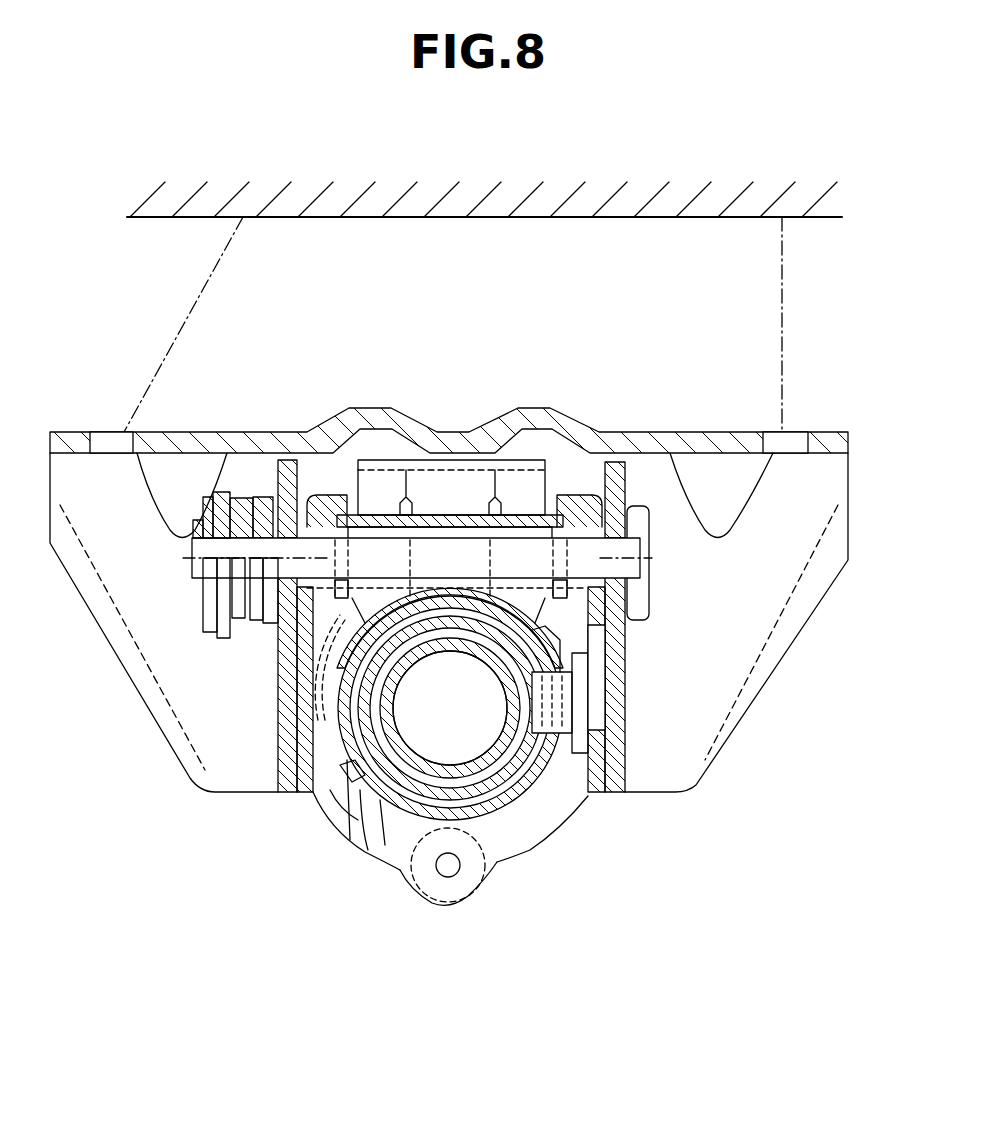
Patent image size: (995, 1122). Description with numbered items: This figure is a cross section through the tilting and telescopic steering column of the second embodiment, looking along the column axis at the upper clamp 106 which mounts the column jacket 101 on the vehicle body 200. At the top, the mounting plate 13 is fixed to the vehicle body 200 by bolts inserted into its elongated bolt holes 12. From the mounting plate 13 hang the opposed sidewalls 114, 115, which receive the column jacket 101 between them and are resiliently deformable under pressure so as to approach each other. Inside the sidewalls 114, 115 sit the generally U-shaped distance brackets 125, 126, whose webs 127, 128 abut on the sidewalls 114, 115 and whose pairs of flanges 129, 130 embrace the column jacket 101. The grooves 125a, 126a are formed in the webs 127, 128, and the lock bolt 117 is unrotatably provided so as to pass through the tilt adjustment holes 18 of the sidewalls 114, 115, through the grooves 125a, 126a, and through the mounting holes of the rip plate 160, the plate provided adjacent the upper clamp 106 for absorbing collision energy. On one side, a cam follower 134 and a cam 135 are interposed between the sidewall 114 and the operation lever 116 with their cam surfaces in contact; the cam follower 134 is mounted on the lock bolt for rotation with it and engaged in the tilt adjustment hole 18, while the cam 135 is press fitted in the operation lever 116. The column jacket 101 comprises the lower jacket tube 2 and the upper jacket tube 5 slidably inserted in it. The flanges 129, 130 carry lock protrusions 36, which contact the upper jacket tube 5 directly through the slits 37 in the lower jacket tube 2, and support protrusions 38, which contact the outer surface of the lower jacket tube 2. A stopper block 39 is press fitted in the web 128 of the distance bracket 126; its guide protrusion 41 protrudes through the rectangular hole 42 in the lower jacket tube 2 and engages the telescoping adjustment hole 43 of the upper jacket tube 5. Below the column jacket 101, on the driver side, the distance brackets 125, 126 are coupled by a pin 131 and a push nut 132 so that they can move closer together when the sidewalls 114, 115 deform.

The vehicle body 200 is at (594, 219).
The upper clamp 106 is at (721, 428).
The elongated bolt hole 12 is at (105, 440).
The mounting plate 13 is at (826, 478).
The groove 125a is at (270, 485).
The groove 126a is at (640, 458).
The sidewall 114 is at (280, 765).
The sidewall 115 is at (617, 795).
The web 127 is at (303, 790).
The web 128 is at (600, 797).
The tilt adjustment hole 18 is at (645, 612).
The rip plate 160 is at (494, 452).
The lock bolt 117 is at (513, 545).
The lower jacket tube 2 is at (605, 565).
The cam 135 is at (243, 592).
The operation lever 116 is at (213, 638).
The cam follower 134 is at (257, 622).
The column jacket 101 is at (386, 585).
The telescoping adjustment hole 43 is at (540, 727).
The guide protrusion 41 is at (572, 695).
The rectangular hole 42 is at (590, 735).
The support protrusion 38 is at (606, 648).
The stopper block 39 is at (598, 711).
The distance bracket 125 is at (341, 840).
The distance bracket 126 is at (550, 838).
The flange 130 is at (577, 812).
The pin 131 is at (445, 870).
The push nut 132 is at (467, 897).
The upper jacket tube 5 is at (362, 768).
The lock protrusion 36 is at (345, 768).
The flange 129 is at (340, 807).
The slit 37 is at (362, 790).